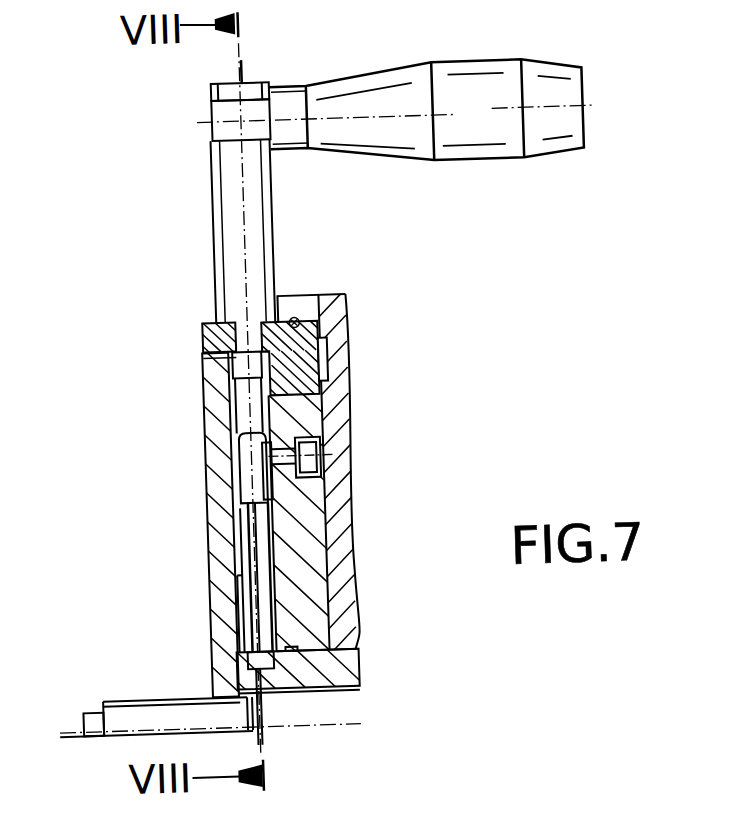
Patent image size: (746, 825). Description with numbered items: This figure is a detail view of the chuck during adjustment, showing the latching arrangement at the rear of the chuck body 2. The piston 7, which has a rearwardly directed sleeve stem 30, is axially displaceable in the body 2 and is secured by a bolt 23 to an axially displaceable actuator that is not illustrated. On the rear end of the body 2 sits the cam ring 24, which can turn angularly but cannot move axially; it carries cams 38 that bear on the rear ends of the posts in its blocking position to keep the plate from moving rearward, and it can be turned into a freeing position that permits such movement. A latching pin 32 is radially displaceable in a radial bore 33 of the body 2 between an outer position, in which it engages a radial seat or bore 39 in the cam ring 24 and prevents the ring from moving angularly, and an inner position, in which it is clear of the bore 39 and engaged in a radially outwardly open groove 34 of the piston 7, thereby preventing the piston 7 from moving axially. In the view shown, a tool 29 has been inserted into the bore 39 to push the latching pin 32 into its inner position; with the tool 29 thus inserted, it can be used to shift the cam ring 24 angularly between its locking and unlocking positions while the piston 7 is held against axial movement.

The chuck body 2 is at (326, 433).
The piston 7 is at (338, 680).
The bolt 23 is at (134, 715).
The cam ring 24 is at (292, 327).
The tool 29 is at (226, 242).
The sleeve stem 30 is at (340, 631).
The latching pin 32 is at (264, 491).
The radial bore 33 is at (228, 436).
The groove 34 is at (237, 645).
The cams 38 is at (321, 360).
The radial seat or bore 39 is at (232, 330).